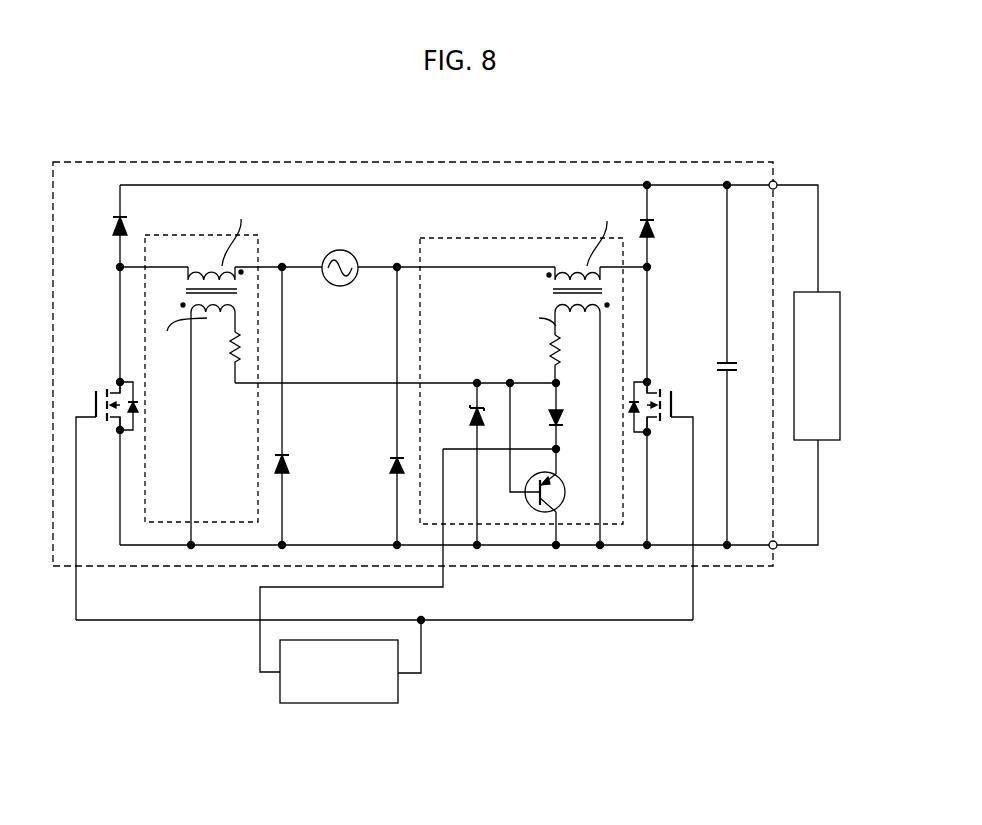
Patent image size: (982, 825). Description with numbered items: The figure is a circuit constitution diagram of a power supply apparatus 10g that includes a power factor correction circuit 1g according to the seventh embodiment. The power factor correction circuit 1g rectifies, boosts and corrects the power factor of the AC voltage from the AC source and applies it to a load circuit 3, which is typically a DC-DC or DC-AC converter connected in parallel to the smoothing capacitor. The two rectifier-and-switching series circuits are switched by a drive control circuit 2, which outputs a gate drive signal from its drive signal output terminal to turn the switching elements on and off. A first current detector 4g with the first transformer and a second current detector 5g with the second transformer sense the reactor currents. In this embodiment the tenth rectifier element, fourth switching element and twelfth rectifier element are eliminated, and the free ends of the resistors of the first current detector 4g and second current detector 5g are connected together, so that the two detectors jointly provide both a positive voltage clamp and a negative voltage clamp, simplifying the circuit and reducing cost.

The power supply apparatus 10g is at (96, 132).
The power factor correction circuit 1g is at (201, 162).
The drive control circuit 2 is at (355, 729).
The load circuit 3 is at (841, 304).
The first current detector 4g is at (511, 525).
The second current detector 5g is at (166, 524).